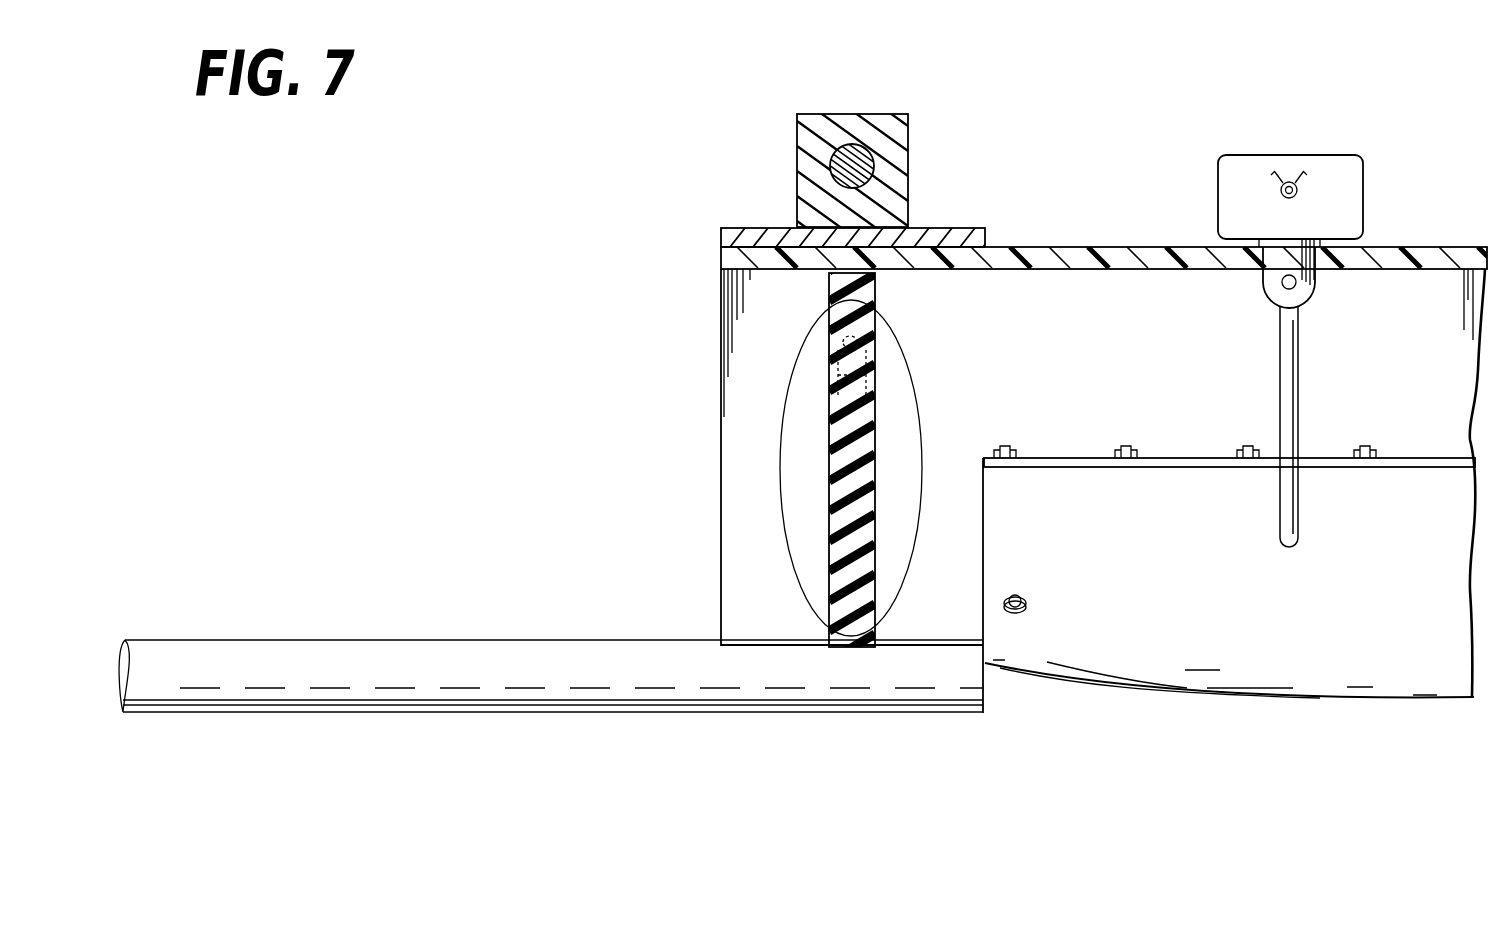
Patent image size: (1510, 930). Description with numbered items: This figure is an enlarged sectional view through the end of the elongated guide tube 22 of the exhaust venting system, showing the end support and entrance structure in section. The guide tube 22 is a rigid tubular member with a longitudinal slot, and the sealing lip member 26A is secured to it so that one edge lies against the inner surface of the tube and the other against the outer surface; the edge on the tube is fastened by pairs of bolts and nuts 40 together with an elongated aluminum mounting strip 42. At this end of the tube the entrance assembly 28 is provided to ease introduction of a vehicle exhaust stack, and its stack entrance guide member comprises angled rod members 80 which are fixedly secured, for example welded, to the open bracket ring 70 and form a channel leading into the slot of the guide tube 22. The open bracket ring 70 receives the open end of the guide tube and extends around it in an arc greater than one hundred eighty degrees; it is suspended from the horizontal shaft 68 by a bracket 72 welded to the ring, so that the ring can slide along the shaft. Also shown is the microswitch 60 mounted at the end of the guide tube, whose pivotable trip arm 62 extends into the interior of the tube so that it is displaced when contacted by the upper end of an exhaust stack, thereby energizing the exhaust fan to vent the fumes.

The guide tube 22 is at (1045, 262).
The sealing lip member 26A is at (1312, 622).
The entrance assembly 28 is at (829, 472).
The bolts and nuts 40 is at (1005, 446).
The mounting strip 42 is at (1070, 460).
The microswitch 60 is at (1218, 204).
The trip arm 62 is at (1292, 372).
The horizontal shaft 68 is at (872, 162).
The open bracket ring 70 is at (738, 236).
The bracket 72 is at (882, 138).
The angled rod member 80 is at (262, 655).